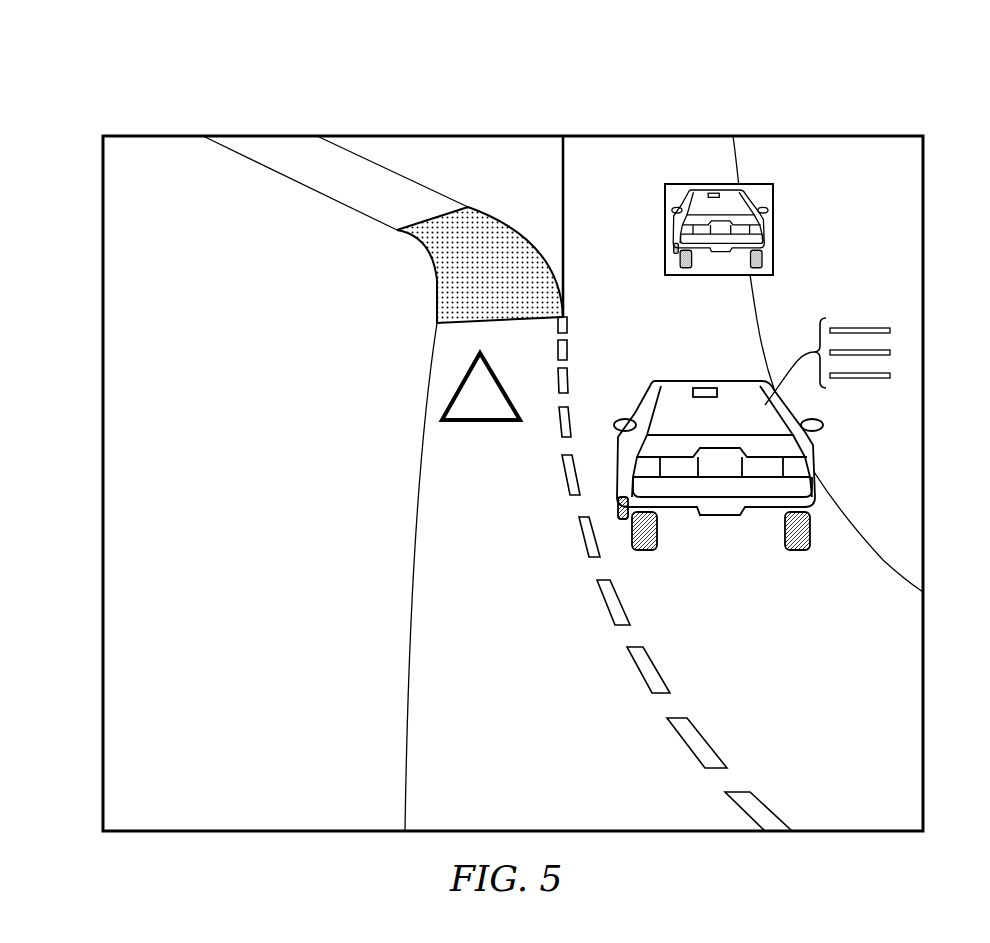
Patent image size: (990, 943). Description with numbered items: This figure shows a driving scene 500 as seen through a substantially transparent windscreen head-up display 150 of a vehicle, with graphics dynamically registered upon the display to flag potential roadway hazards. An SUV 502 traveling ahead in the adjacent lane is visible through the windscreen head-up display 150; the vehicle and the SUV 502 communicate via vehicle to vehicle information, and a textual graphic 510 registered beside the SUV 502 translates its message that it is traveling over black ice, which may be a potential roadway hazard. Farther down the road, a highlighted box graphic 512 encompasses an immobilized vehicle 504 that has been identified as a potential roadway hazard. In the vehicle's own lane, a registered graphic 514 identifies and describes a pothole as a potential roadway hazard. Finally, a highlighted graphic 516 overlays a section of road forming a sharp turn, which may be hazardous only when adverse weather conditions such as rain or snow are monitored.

The driving scene 500 is at (138, 114).
The windscreen head-up display 150 is at (821, 135).
The SUV 502 is at (813, 463).
The immobilized vehicle 504 is at (742, 207).
The textual graphic 510 is at (812, 342).
The highlighted box graphic 512 is at (773, 250).
The registered graphic 514 is at (458, 393).
The highlighted graphic 516 is at (437, 281).